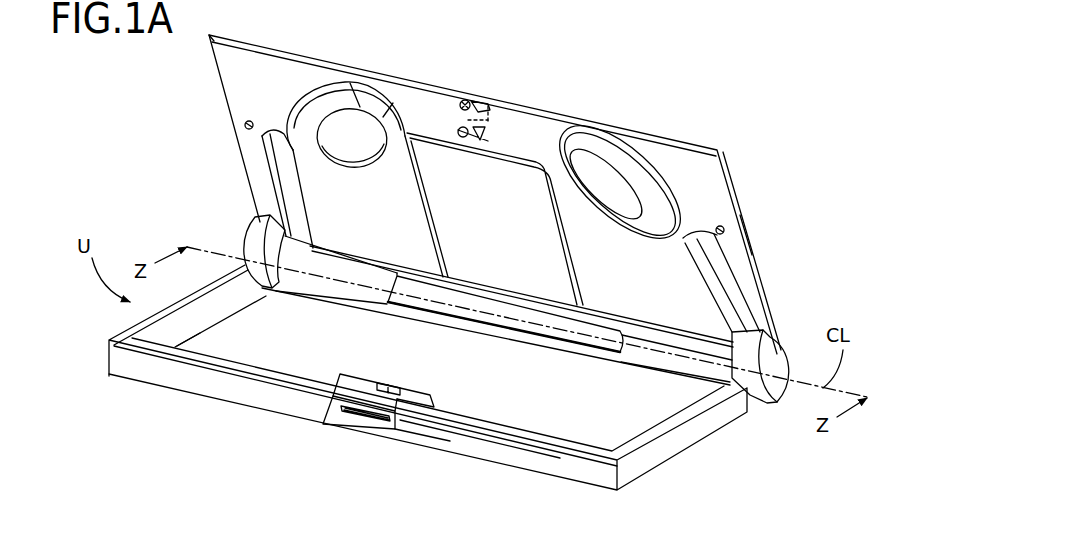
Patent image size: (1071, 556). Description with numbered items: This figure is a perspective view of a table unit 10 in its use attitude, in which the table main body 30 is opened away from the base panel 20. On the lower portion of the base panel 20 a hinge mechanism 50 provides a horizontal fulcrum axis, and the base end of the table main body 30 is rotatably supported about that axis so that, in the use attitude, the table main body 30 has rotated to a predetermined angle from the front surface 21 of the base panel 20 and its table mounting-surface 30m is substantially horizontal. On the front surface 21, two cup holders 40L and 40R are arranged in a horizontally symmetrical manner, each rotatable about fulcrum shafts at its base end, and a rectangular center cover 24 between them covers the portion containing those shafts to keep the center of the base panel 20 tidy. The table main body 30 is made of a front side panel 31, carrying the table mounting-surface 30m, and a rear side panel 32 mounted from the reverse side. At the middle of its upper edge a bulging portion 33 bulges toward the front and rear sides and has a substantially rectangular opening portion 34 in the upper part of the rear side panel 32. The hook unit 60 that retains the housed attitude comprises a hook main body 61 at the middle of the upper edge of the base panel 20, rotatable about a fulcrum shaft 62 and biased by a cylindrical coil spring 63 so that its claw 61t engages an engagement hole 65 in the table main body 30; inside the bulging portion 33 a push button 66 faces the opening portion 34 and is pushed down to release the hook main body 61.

The table unit 10 is at (742, 86).
The base panel 20 is at (628, 122).
The front surface 21 is at (705, 186).
The center cover 24 is at (505, 193).
The table main body 30 is at (660, 468).
The table mounting-surface 30m is at (635, 403).
The front side panel 31 is at (163, 337).
The rear side panel 32 is at (150, 386).
The bulging portion 33 is at (350, 375).
The opening portion 34 is at (397, 437).
The cup holder 40L is at (330, 189).
The cup holder 40R is at (665, 273).
The hinge mechanism 50 is at (778, 404).
The hook unit 60 is at (347, 421).
The hook main body 61 is at (500, 120).
The claw 61t is at (457, 130).
The fulcrum shaft 62 is at (495, 93).
The cylindrical coil spring 63 is at (475, 107).
The engagement hole 65 is at (390, 392).
The push button 66 is at (370, 425).